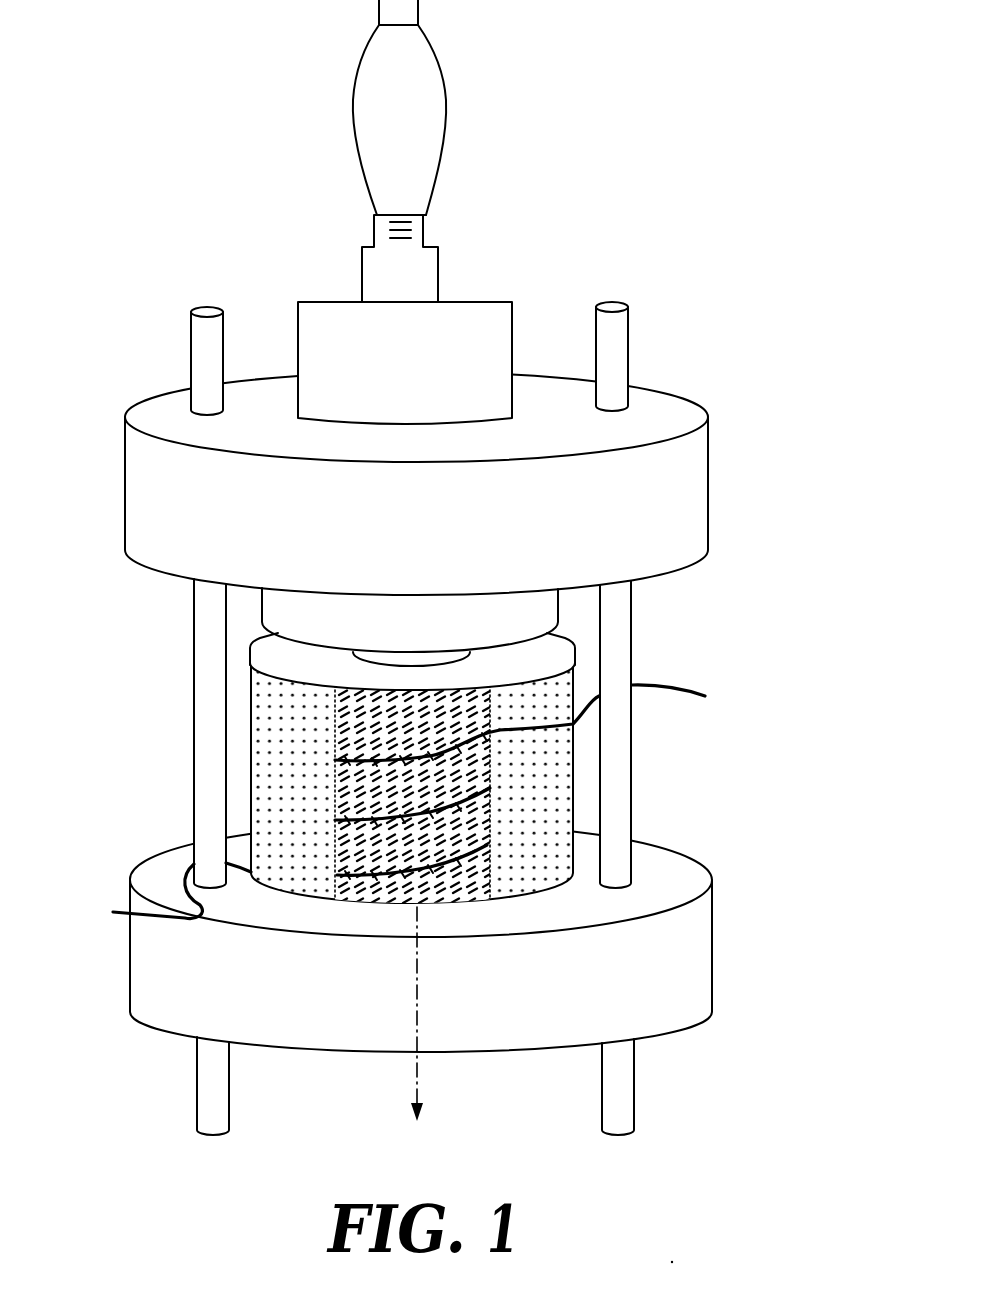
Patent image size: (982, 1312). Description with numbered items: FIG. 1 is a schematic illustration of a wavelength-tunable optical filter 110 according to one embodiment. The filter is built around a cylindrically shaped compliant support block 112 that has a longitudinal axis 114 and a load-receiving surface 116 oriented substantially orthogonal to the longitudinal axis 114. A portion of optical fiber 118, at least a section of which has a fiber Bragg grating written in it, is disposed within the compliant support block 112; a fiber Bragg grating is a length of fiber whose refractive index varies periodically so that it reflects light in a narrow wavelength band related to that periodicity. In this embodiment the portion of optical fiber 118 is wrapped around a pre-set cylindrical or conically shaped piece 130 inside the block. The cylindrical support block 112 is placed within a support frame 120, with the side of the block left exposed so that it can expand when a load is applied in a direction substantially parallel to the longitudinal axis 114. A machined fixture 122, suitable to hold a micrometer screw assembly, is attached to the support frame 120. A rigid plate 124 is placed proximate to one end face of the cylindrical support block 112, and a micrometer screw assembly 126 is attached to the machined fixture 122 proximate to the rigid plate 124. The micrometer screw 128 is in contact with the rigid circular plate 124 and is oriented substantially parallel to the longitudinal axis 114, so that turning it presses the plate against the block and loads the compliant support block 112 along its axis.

The wavelength-tunable optical filter 110 is at (472, 578).
The cylindrically shaped compliant support block 112 is at (251, 708).
The longitudinal axis 114 is at (415, 1063).
The load-receiving surface 116 is at (547, 653).
The portion of optical fiber 118 is at (447, 757).
The support frame 120 is at (708, 478).
The machined fixture 122 is at (329, 302).
The rigid plate 124 is at (262, 599).
The micrometer screw assembly 126 is at (438, 283).
The micrometer screw 128 is at (445, 123).
The pre-set cylindrical or conically shaped piece 130 is at (335, 790).